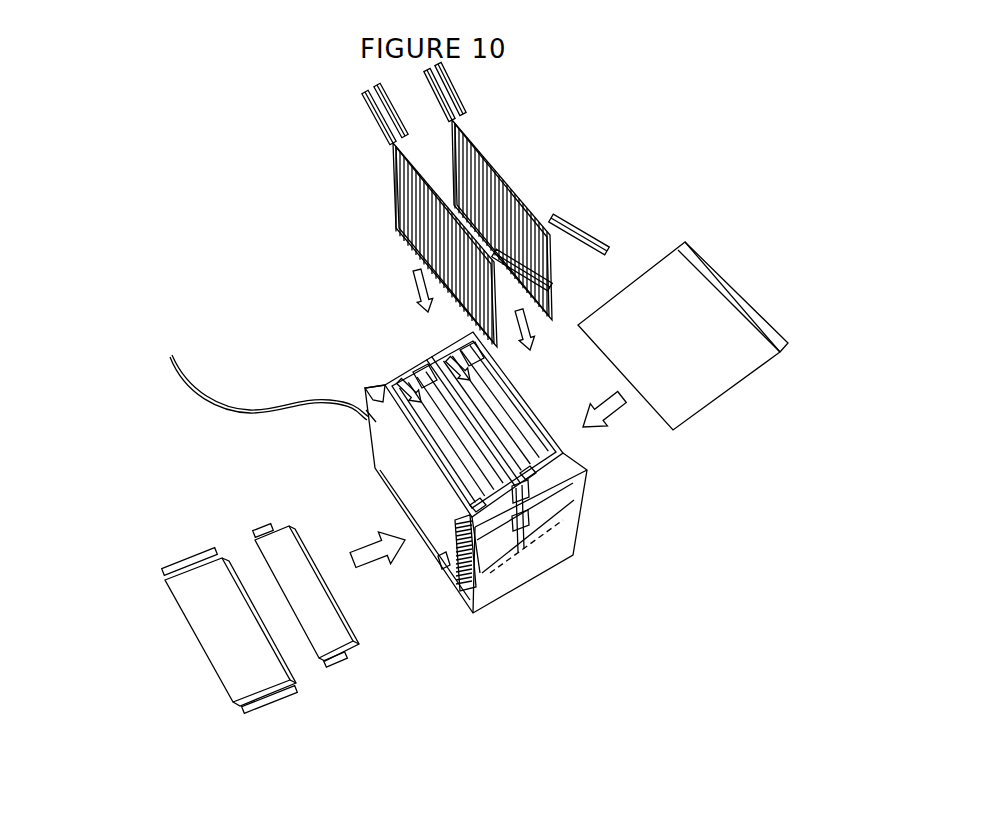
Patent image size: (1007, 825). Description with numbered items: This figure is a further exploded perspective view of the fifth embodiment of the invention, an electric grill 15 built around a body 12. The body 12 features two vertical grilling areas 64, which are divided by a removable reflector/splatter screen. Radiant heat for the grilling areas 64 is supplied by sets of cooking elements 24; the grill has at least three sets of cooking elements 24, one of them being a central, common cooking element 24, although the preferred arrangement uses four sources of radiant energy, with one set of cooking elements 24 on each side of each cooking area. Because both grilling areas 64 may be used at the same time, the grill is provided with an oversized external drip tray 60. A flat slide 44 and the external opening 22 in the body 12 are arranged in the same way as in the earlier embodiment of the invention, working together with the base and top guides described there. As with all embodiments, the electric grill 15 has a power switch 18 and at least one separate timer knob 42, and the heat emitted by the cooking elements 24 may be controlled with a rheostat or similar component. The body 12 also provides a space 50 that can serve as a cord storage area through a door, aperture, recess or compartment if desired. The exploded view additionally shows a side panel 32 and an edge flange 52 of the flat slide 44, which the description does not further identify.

The body 12 is at (576, 515).
The electric grill 15 is at (415, 347).
The power switch 18 is at (363, 423).
The external opening 22 is at (442, 565).
The cooking element 24 is at (472, 455).
The side panel 32 is at (286, 563).
The timer knob 42 is at (466, 588).
The flat slide 44 is at (682, 292).
The space 50 is at (557, 530).
The plate edge flange 52 is at (755, 316).
The external drip tray 60 is at (218, 608).
The vertical grilling area 64 is at (427, 355).